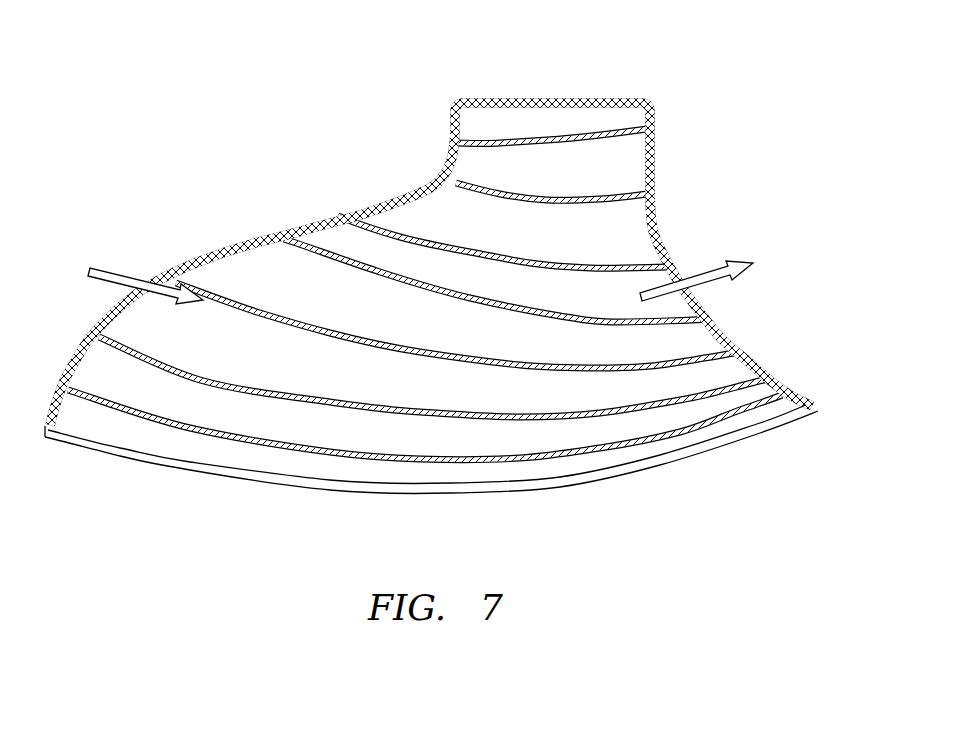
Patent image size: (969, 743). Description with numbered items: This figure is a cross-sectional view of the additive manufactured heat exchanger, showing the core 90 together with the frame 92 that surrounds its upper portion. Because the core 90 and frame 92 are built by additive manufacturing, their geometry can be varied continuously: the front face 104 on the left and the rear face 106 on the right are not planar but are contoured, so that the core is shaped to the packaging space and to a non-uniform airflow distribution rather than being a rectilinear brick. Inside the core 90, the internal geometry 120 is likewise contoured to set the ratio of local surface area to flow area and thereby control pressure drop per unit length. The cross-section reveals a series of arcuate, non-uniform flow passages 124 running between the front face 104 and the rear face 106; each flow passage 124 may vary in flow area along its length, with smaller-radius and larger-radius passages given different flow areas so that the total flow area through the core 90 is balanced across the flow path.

The core 90 is at (431, 283).
The frame 92 is at (498, 97).
The front face 104 is at (308, 217).
The rear face 106 is at (670, 248).
The internal geometry 120 is at (523, 167).
The flow passages 124 is at (597, 157).